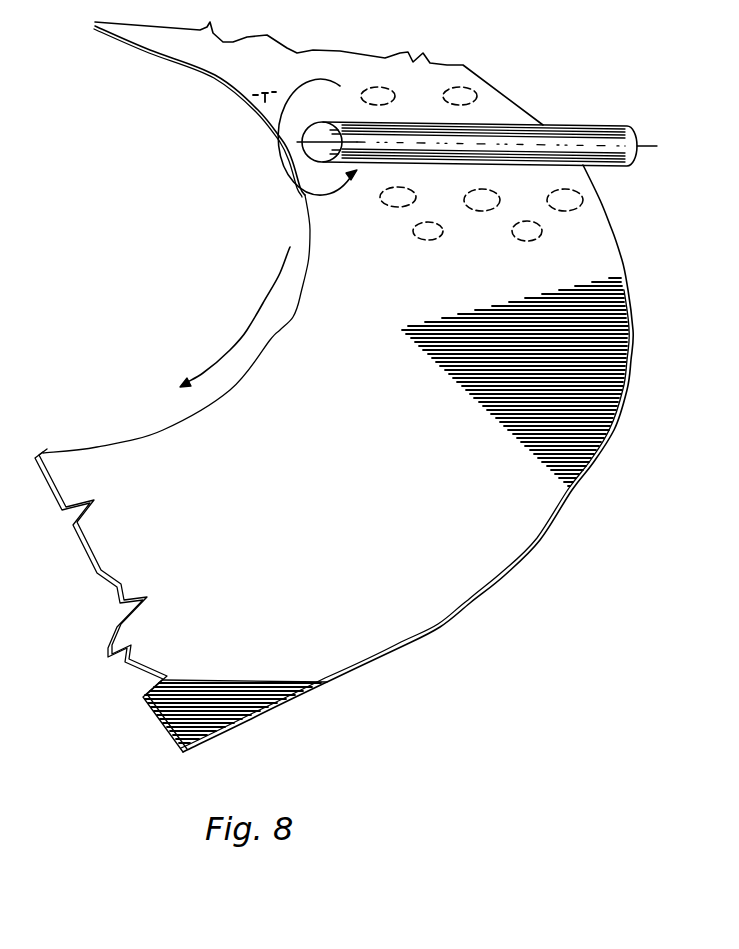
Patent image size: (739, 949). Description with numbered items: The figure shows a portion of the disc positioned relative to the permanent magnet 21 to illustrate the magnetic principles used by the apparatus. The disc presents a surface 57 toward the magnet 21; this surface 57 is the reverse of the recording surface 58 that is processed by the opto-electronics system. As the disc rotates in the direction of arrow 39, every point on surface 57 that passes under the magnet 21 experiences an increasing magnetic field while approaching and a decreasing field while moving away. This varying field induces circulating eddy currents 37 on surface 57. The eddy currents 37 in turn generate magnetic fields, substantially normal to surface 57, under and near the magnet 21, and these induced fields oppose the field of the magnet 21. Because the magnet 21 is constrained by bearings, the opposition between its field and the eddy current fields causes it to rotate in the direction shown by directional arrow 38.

The permanent magnet 21 is at (617, 108).
The eddy currents 37 is at (447, 92).
The directional arrow 38 is at (288, 168).
The arrow 39 is at (257, 320).
The surface 57 is at (329, 373).
The recording surface 58 is at (262, 105).